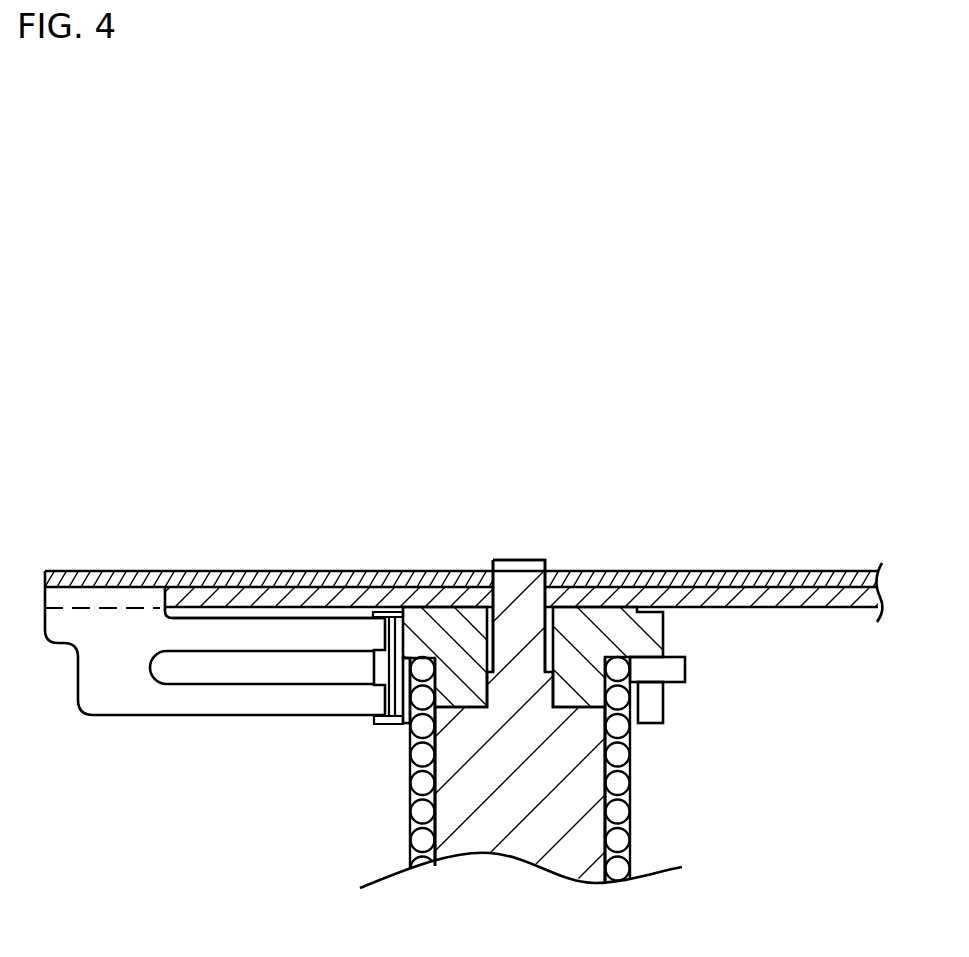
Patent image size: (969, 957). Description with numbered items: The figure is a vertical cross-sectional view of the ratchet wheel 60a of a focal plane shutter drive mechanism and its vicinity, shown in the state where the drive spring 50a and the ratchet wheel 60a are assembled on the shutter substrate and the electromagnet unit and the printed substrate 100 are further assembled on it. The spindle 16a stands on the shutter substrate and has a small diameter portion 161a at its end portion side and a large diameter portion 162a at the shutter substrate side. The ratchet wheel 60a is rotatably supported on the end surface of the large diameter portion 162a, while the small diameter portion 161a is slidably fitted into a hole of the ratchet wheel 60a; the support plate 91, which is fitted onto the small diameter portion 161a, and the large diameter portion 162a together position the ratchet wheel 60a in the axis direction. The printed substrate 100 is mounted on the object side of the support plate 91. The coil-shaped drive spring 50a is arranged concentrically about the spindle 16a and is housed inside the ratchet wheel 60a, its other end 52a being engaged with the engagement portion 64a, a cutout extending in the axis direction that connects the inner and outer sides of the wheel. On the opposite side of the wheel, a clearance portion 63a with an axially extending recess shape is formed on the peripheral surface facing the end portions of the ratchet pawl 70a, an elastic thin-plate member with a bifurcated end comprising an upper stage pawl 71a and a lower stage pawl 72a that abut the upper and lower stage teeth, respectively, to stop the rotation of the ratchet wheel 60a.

The printed substrate 100 is at (736, 570).
The support plate 91 is at (847, 608).
The spindle 16a is at (549, 561).
The small diameter portion 161a is at (516, 575).
The large diameter portion 162a is at (590, 775).
The ratchet wheel 60a is at (660, 626).
The other end of drive spring 52a is at (676, 670).
The engagement portion 64a is at (655, 706).
The drive spring 50a is at (408, 771).
The clearance portion 63a is at (388, 625).
The ratchet pawl 70a is at (182, 717).
The upper stage pawl 71a is at (303, 630).
The lower stage pawl 72a is at (255, 703).